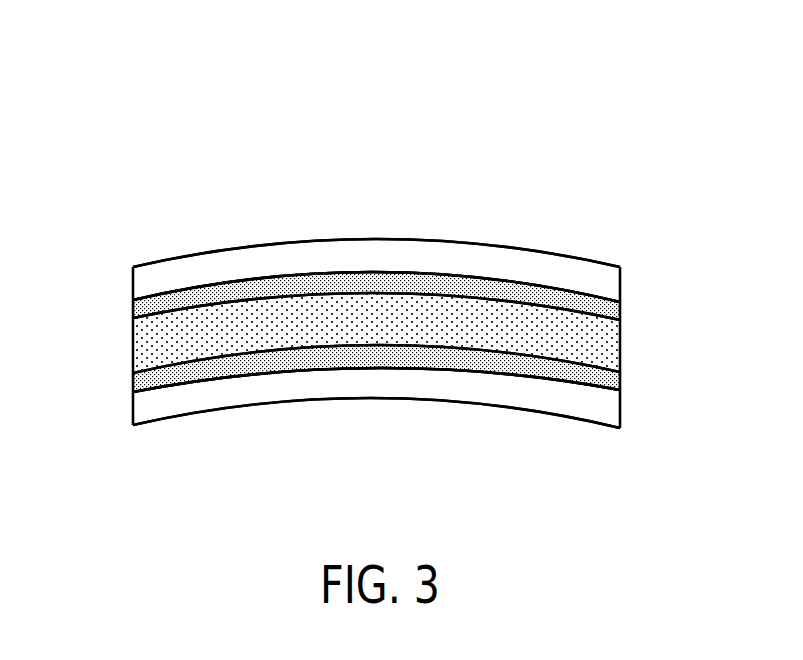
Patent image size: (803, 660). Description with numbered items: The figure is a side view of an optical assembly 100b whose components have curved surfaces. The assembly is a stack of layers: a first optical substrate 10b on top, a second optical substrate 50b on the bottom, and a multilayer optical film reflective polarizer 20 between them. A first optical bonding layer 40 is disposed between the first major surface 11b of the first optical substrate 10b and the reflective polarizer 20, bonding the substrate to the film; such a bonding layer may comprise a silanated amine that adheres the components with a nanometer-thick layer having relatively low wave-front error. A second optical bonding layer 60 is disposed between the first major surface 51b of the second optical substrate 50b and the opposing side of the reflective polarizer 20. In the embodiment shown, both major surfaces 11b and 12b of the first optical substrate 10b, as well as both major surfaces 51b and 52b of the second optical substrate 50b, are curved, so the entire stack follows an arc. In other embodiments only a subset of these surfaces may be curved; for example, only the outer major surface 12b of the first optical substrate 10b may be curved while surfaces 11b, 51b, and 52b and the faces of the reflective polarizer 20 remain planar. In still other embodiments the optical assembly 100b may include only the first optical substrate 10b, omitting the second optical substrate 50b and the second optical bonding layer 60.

The optical assembly 100b is at (147, 93).
The first optical substrate 10b is at (260, 260).
The first major surface of the first optical substrate 11b is at (182, 290).
The second major surface of the first optical substrate 12b is at (415, 238).
The first optical bonding layer 40 is at (620, 308).
The reflective polarizer 20 is at (608, 352).
The second optical bonding layer 60 is at (615, 383).
The second optical substrate 50b is at (275, 393).
The first major surface of the second optical substrate 51b is at (185, 393).
The second major surface of the second optical substrate 52b is at (403, 398).